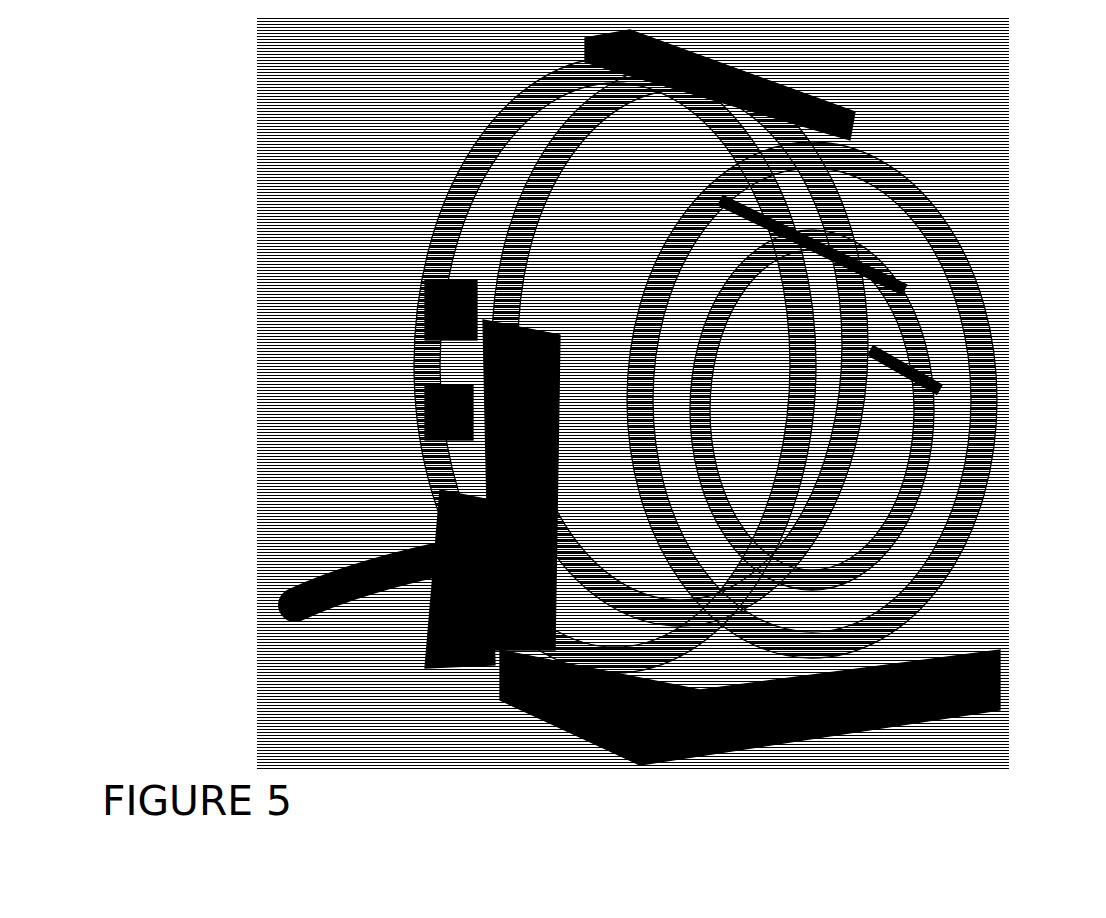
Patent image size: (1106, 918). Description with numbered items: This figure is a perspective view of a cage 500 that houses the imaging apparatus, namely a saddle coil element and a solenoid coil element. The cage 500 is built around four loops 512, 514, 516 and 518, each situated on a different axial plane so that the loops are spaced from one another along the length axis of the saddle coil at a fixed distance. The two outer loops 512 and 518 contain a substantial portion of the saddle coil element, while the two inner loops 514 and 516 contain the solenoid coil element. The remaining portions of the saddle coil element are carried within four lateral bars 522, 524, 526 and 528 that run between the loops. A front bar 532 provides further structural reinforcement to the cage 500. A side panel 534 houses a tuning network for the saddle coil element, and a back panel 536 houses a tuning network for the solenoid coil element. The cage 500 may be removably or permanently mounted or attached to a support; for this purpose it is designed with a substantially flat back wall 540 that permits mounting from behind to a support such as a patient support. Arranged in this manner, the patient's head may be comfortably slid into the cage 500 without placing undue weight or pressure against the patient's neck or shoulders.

The cage 500 is at (988, 767).
The outer loop 512 is at (440, 190).
The inner loop 514 is at (560, 176).
The inner loop 516 is at (900, 455).
The outer loop 518 is at (968, 526).
The lateral bar 522 is at (418, 302).
The lateral bar 524 is at (406, 415).
The lateral bar 526 is at (912, 288).
The lateral bar 528 is at (930, 370).
The front bar 532 is at (748, 63).
The side panel 534 is at (494, 451).
The back panel 536 is at (540, 705).
The back wall 540 is at (376, 684).